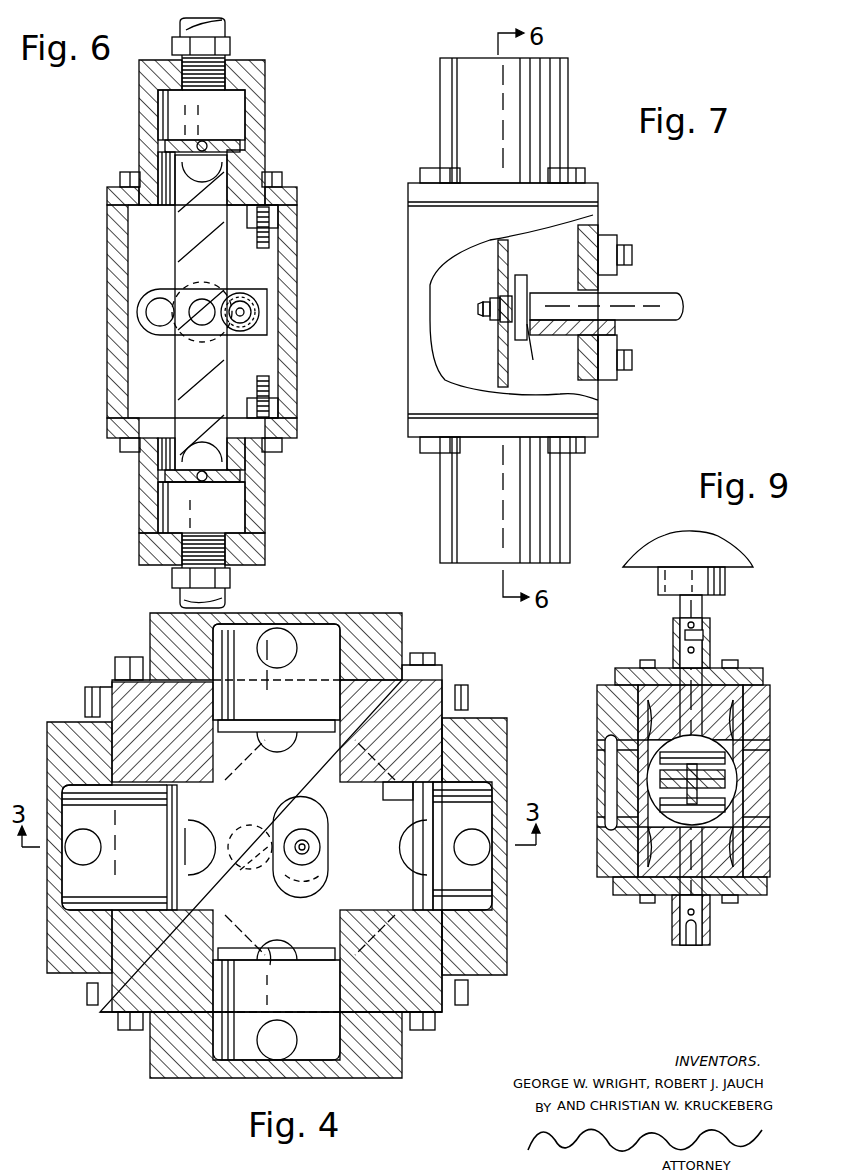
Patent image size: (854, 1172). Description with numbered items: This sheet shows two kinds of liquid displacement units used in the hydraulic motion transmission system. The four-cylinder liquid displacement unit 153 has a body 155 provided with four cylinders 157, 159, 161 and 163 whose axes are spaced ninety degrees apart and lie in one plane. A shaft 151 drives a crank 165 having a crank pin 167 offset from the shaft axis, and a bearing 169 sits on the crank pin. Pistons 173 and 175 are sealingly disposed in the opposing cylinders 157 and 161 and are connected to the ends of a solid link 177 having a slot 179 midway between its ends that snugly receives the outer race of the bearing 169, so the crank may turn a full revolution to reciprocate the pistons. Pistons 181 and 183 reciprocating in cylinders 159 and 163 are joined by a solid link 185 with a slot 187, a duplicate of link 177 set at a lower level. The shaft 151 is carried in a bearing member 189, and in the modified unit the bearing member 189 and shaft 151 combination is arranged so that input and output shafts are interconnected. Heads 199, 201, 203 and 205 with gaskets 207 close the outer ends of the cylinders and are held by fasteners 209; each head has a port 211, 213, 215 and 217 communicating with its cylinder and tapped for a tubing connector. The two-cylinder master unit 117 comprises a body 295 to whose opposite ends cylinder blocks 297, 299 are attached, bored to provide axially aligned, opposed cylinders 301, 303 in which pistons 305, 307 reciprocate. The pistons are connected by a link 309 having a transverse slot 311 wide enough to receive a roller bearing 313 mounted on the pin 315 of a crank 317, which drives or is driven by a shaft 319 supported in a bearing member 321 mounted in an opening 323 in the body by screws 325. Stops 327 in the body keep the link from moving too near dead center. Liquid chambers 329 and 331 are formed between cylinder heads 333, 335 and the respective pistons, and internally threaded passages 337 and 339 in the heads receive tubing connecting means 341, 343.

In FIG. 6, the master unit 117 is at (92, 212).
In FIG. 7, the master unit 117 is at (598, 405).
In FIG. 9, the shaft 151 is at (688, 665).
In FIG. 4, the shaft 151 is at (268, 832).
In FIG. 9, the liquid displacement unit 153 is at (596, 880).
In FIG. 4, the liquid displacement unit 153 is at (452, 673).
In FIG. 9, the body 155 is at (615, 695).
In FIG. 4, the body 155 is at (448, 1007).
In FIG. 4, the cylinder 157 is at (393, 865).
In FIG. 4, the cylinder 159 is at (340, 694).
In FIG. 4, the cylinder 161 is at (140, 905).
In FIG. 4, the cylinder 163 is at (338, 995).
In FIG. 4, the crank 165 is at (312, 870).
In FIG. 9, the crank pin 167 is at (730, 757).
In FIG. 4, the crank pin 167 is at (315, 843).
In FIG. 4, the bearing 169 is at (322, 850).
In FIG. 4, the piston 173 is at (432, 890).
In FIG. 4, the piston 175 is at (178, 857).
In FIG. 4, the solid link 177 is at (378, 802).
In FIG. 4, the slot 179 is at (270, 870).
In FIG. 4, the piston 181 is at (248, 718).
In FIG. 4, the piston 183 is at (310, 972).
In FIG. 4, the solid link 185 is at (291, 929).
In FIG. 4, the slot 187 is at (240, 860).
In FIG. 9, the bearing member 189 is at (748, 688).
In FIG. 4, the head 199 is at (495, 750).
In FIG. 4, the head 201 is at (372, 630).
In FIG. 4, the head 203 is at (73, 735).
In FIG. 4, the head 205 is at (400, 1074).
In FIG. 4, the gasket 207 is at (398, 660).
In FIG. 4, the fastener 209 is at (436, 657).
In FIG. 4, the port 211 is at (478, 850).
In FIG. 4, the port 213 is at (277, 1046).
In FIG. 4, the port 215 is at (83, 852).
In FIG. 4, the port 217 is at (277, 642).
In FIG. 6, the body 295 is at (297, 272).
In FIG. 7, the body 295 is at (600, 224).
In FIG. 6, the cylinder block 297 is at (262, 124).
In FIG. 7, the cylinder block 297 is at (470, 120).
In FIG. 6, the cylinder block 299 is at (265, 522).
In FIG. 7, the cylinder block 299 is at (452, 486).
In FIG. 6, the cylinder 301 is at (234, 165).
In FIG. 6, the cylinder 303 is at (233, 512).
In FIG. 6, the piston 305 is at (214, 146).
In FIG. 6, the piston 307 is at (212, 482).
In FIG. 6, the link 309 is at (215, 372).
In FIG. 7, the link 309 is at (498, 270).
In FIG. 6, the transverse slot 311 is at (160, 300).
In FIG. 6, the roller bearing 313 is at (258, 311).
In FIG. 7, the roller bearing 313 is at (497, 326).
In FIG. 6, the pin 315 is at (242, 300).
In FIG. 7, the pin 315 is at (480, 308).
In FIG. 6, the crank 317 is at (178, 320).
In FIG. 7, the crank 317 is at (545, 353).
In FIG. 6, the shaft 319 is at (202, 300).
In FIG. 7, the shaft 319 is at (660, 302).
In FIG. 7, the bearing member 321 is at (562, 285).
In FIG. 7, the opening 323 is at (530, 348).
In FIG. 7, the screw 325 is at (634, 359).
In FIG. 6, the stop 327 is at (270, 243).
In FIG. 6, the liquid chamber 329 is at (232, 98).
In FIG. 6, the liquid chamber 331 is at (205, 522).
In FIG. 6, the cylinder head 333 is at (235, 60).
In FIG. 6, the cylinder head 335 is at (232, 545).
In FIG. 6, the internally threaded passage 337 is at (228, 82).
In FIG. 6, the internally threaded passage 339 is at (178, 548).
In FIG. 6, the tubing connecting means 341 is at (226, 36).
In FIG. 6, the tubing connecting means 343 is at (176, 580).